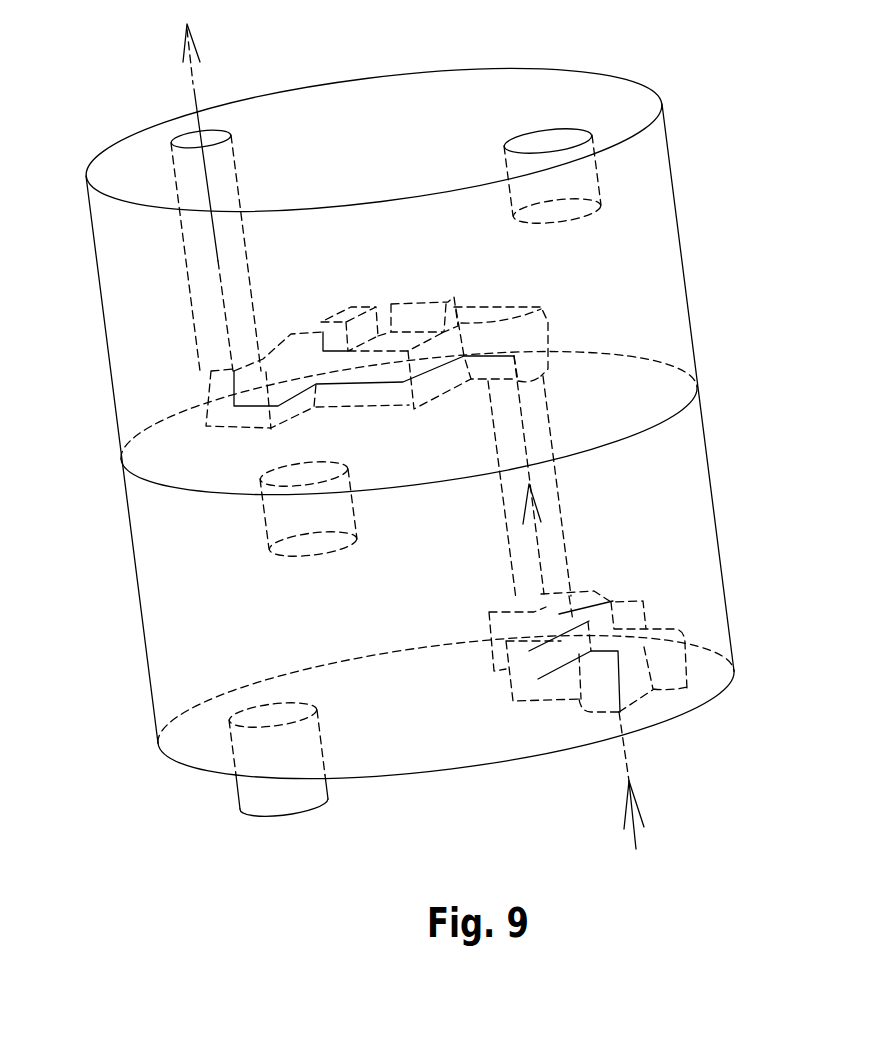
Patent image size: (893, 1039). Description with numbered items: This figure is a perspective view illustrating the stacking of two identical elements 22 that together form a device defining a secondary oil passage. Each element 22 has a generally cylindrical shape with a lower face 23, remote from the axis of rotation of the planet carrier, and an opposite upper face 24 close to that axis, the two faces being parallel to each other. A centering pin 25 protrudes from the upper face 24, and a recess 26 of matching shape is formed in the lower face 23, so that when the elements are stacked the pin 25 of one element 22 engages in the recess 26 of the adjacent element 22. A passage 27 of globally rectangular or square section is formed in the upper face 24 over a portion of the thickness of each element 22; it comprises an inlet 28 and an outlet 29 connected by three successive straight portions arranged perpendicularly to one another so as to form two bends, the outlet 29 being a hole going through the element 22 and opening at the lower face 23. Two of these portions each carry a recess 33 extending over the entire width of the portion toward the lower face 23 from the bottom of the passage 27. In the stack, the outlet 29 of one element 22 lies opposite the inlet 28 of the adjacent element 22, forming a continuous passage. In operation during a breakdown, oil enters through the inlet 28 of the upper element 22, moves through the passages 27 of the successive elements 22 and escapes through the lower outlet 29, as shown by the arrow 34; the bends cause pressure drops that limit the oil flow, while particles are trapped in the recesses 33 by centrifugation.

The element 22 is at (147, 317).
The lower face 23 is at (420, 117).
The upper face 24 is at (427, 777).
The centering pin 25 is at (282, 800).
The recess 26 is at (540, 133).
The passage 27 is at (378, 398).
The inlet 28 is at (533, 340).
The outlet 29 is at (207, 390).
The recess 33 is at (418, 320).
The arrow 34 is at (193, 99).